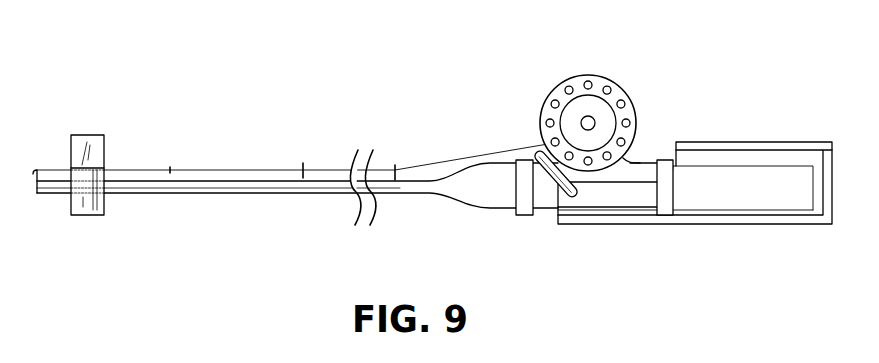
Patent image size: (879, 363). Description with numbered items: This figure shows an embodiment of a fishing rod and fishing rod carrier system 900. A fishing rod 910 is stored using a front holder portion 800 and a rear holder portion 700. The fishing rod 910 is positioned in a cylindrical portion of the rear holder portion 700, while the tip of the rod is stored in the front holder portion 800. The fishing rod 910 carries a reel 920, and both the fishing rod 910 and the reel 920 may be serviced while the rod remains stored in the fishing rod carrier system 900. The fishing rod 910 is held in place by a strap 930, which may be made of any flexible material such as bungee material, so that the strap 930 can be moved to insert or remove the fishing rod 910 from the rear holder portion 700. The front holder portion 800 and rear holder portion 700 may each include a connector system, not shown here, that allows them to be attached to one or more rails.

The rear holder portion 700 is at (822, 142).
The front holder portion 800 is at (98, 135).
The fishing rod and fishing rod carrier system 900 is at (262, 104).
The fishing rod 910 is at (498, 197).
The reel 920 is at (555, 90).
The strap 930 is at (537, 155).